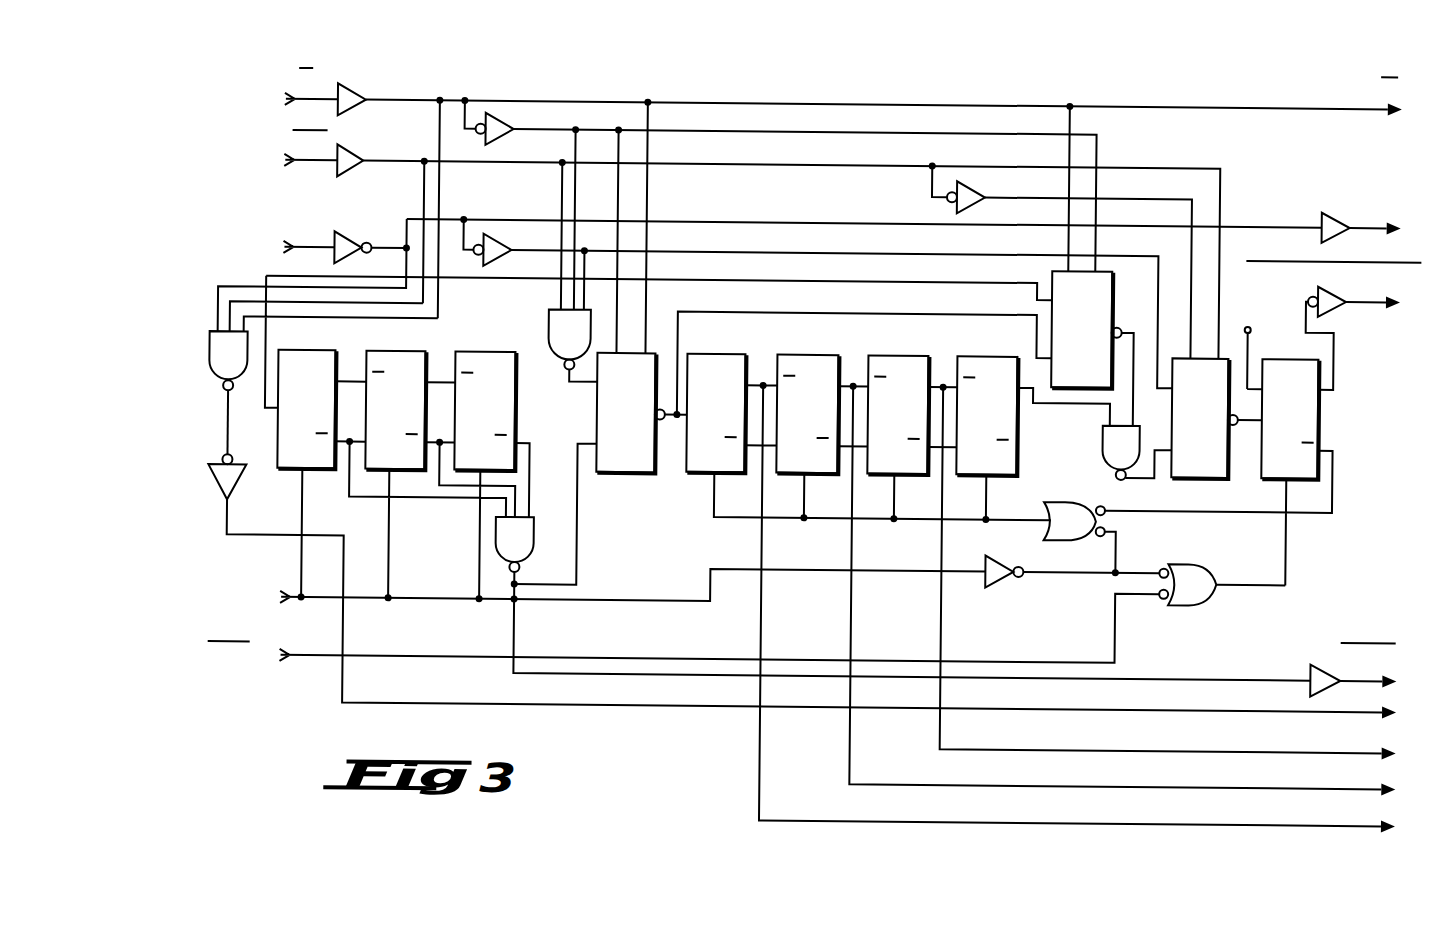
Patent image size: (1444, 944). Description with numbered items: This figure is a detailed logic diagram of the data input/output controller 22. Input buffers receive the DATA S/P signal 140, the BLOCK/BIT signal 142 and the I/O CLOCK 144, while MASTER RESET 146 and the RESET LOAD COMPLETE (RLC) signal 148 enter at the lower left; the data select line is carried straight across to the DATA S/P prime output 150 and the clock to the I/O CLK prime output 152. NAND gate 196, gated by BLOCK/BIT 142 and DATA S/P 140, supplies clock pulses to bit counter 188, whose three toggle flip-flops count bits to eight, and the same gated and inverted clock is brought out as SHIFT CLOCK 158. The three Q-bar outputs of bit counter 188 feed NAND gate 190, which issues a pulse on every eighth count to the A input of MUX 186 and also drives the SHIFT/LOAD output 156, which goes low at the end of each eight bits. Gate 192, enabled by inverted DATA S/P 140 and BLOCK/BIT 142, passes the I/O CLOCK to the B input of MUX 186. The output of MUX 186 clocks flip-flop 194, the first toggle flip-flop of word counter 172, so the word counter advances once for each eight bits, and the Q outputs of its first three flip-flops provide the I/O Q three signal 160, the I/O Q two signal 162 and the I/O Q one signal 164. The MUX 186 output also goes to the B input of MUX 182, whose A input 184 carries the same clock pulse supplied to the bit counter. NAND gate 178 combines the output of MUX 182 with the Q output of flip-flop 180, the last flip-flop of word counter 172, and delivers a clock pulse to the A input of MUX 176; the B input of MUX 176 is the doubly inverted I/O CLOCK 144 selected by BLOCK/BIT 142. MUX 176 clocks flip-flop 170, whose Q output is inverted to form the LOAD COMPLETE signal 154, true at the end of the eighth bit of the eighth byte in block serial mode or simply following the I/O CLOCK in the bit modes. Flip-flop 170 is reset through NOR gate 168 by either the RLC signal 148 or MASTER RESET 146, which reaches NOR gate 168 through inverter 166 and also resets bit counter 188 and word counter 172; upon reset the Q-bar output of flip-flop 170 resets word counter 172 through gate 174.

The shift register control circuit 22 is at (810, 456).
The DATA S/P signal 140 is at (323, 97).
The BLOCK/BIT signal 142 is at (323, 166).
The I/O CLOCK 144 is at (305, 250).
The MASTER RESET signal 146 is at (288, 600).
The RESET LOAD COMPLETE (RLC) signal 148 is at (288, 658).
The DATA S/P' output 150 is at (1373, 104).
The I/O CLK' output buffer 152 is at (1385, 244).
The LOAD COMPLETE signal 154 is at (1336, 304).
The SHIFT/LOAD output 156 is at (1348, 676).
The SHIFT CLOCK output 158 is at (1270, 708).
The I/O Q3 signal 160 is at (1297, 748).
The I/O Q2 signal 162 is at (1297, 784).
The I/O Q1 signal 164 is at (1303, 821).
The inverter 166 is at (1001, 577).
The NOR gate 168 is at (1200, 595).
The flip-flop 170 is at (1318, 396).
The word counter 172 is at (867, 423).
The gate 174 is at (1052, 530).
The MUX 176 is at (1182, 471).
The NAND gate 178 is at (1102, 446).
The flip-flop 180 is at (1020, 436).
The MUX 182 is at (1115, 262).
The A input (clock pulse) 184 is at (1029, 276).
The MUX 186 is at (640, 472).
The bit counter 188 is at (487, 320).
The NAND gate 190 is at (535, 530).
The gate 192 is at (548, 321).
The flip-flop 194 is at (697, 472).
The NAND gate 196 is at (236, 391).